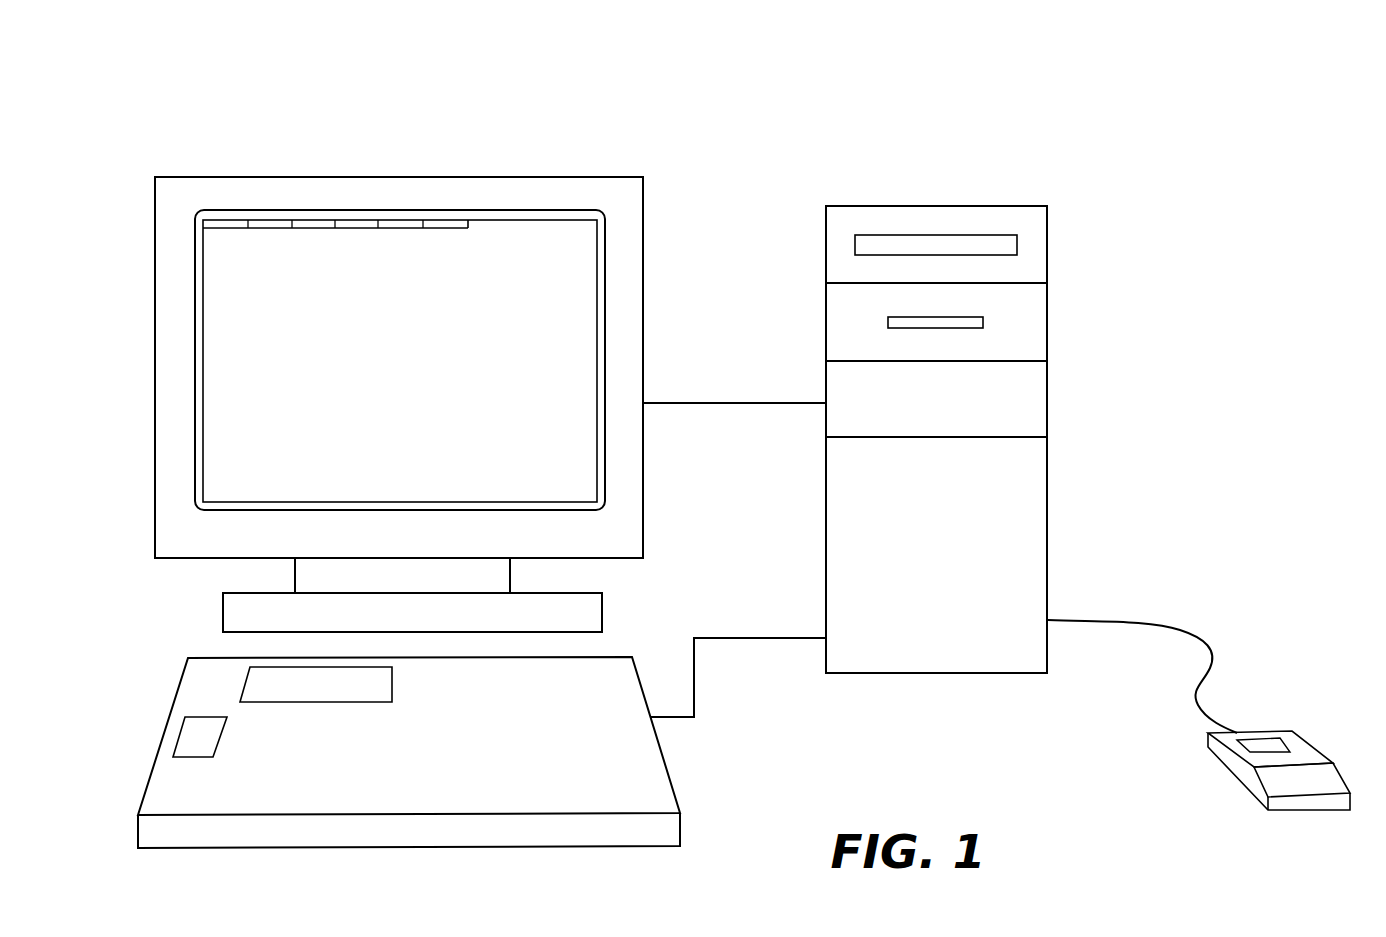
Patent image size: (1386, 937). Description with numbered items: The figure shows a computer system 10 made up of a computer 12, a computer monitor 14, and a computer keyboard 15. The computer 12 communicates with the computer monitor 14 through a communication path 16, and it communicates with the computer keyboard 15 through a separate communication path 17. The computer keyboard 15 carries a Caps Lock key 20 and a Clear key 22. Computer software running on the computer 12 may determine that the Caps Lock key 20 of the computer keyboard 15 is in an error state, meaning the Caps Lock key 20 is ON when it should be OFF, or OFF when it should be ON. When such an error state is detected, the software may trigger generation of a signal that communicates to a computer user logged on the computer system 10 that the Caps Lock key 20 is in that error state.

The computer system 10 is at (715, 118).
The computer 12 is at (936, 439).
The computer monitor 14 is at (399, 404).
The computer keyboard 15 is at (406, 723).
The communication path 16 is at (713, 403).
The communication path 17 is at (715, 638).
The Caps Lock key 20 is at (200, 737).
The Clear key 22 is at (316, 684).